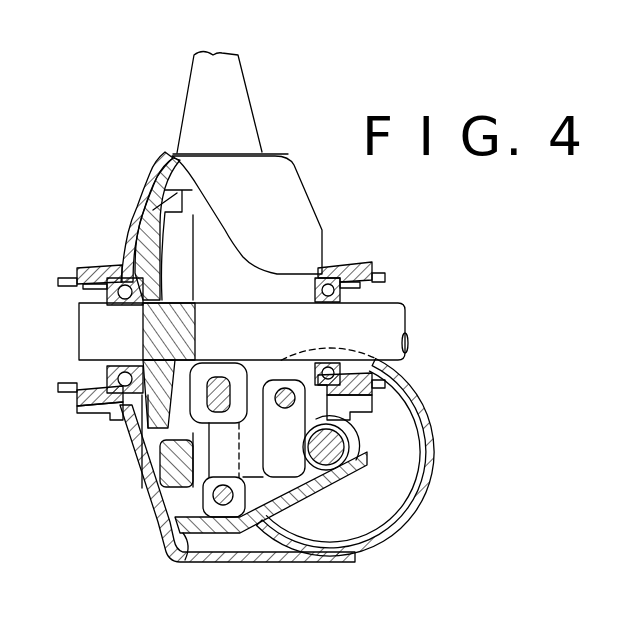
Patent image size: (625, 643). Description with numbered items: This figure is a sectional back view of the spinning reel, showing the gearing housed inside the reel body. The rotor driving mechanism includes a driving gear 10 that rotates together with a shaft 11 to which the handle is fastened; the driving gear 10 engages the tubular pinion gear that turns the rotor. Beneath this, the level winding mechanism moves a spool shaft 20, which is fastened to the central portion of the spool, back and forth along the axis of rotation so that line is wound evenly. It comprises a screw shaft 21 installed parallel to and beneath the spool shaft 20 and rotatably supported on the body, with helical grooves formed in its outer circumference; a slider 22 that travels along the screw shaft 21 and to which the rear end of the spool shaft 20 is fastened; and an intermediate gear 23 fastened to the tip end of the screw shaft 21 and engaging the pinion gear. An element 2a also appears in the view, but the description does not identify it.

The housing cover 2a is at (132, 232).
The driving gear 10 is at (168, 196).
The shaft 11 is at (380, 327).
The spool shaft 20 is at (212, 394).
The screw shaft 21 is at (337, 450).
The slider 22 is at (277, 455).
The intermediate gear 23 is at (400, 430).